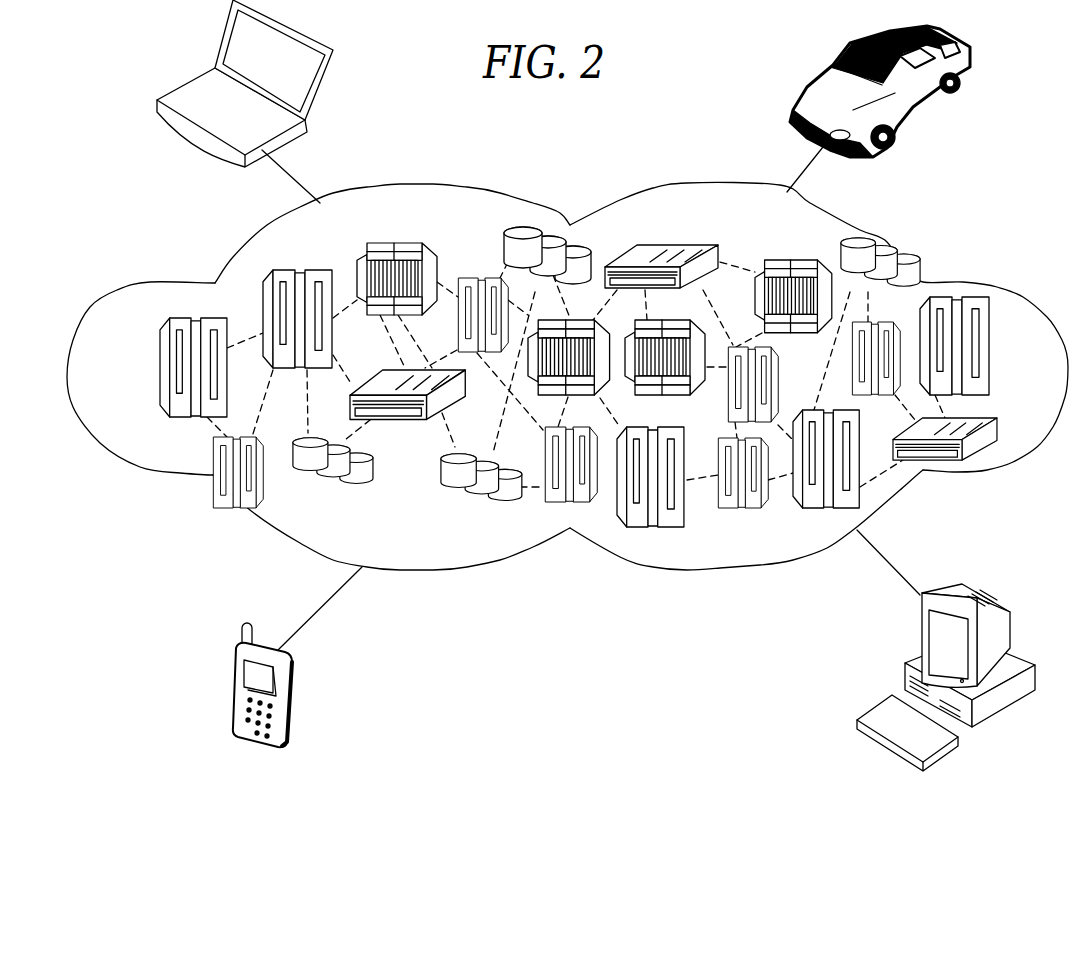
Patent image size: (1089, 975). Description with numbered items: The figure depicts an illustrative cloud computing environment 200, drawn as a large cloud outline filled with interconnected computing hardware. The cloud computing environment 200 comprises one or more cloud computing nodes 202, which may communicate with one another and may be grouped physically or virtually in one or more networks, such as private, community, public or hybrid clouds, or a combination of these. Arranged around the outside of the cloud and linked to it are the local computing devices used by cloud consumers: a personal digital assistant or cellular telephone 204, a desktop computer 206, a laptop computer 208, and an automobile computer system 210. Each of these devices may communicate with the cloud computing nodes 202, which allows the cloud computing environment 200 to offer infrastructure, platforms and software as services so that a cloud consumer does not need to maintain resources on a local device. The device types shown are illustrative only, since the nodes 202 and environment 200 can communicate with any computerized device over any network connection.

The cloud computing environment 200 is at (572, 376).
The cloud computing nodes 202 is at (977, 451).
The personal digital assistant or cellular telephone 204 is at (298, 657).
The desktop computer 206 is at (908, 650).
The laptop computer 208 is at (192, 77).
The automobile computer system 210 is at (807, 78).